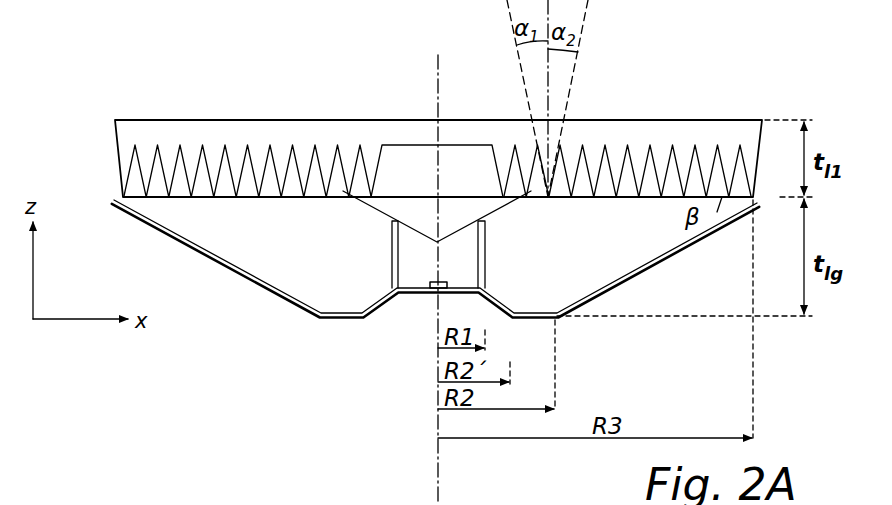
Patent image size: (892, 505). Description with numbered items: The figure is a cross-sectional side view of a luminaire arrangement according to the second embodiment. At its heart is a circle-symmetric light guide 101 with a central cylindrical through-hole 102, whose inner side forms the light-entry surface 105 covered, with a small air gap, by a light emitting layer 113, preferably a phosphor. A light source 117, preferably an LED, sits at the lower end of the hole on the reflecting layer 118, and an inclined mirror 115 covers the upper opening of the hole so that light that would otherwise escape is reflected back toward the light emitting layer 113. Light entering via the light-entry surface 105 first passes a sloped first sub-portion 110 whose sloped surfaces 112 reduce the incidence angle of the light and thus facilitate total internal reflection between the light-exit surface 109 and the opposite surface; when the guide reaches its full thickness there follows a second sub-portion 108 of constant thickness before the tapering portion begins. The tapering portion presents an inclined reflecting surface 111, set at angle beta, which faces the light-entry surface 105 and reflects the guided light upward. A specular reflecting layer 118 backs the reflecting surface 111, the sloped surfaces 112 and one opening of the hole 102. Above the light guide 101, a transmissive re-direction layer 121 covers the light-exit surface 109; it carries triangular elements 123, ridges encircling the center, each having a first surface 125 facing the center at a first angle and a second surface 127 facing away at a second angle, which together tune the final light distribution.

The light guide 101 is at (343, 297).
The cylindrical through-hole 102 is at (402, 322).
The light-entry surface 105 is at (397, 225).
The second sub-portion 108 is at (349, 504).
The light-exit surface 109 is at (281, 205).
The first sub-portion 110 is at (358, 306).
The reflecting surface 111 is at (199, 231).
The sloped surfaces 112 is at (496, 222).
The light emitting layer 113 is at (395, 225).
The mirror 115 is at (461, 226).
The light source 117 is at (422, 292).
The reflecting layer 118 is at (578, 317).
The re-direction layer 121 is at (147, 119).
The triangular elements 123 is at (122, 169).
The first surface 125 is at (583, 186).
The second surface 127 is at (509, 184).